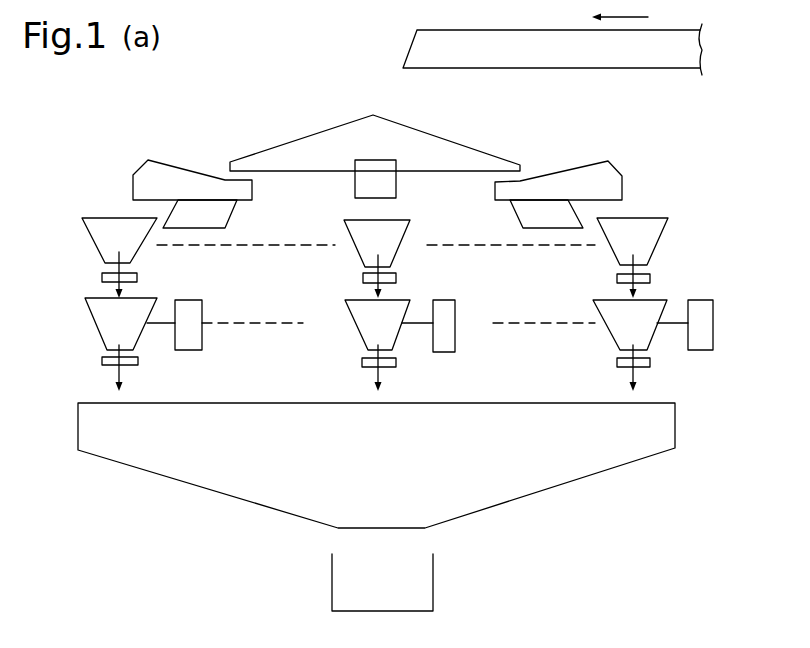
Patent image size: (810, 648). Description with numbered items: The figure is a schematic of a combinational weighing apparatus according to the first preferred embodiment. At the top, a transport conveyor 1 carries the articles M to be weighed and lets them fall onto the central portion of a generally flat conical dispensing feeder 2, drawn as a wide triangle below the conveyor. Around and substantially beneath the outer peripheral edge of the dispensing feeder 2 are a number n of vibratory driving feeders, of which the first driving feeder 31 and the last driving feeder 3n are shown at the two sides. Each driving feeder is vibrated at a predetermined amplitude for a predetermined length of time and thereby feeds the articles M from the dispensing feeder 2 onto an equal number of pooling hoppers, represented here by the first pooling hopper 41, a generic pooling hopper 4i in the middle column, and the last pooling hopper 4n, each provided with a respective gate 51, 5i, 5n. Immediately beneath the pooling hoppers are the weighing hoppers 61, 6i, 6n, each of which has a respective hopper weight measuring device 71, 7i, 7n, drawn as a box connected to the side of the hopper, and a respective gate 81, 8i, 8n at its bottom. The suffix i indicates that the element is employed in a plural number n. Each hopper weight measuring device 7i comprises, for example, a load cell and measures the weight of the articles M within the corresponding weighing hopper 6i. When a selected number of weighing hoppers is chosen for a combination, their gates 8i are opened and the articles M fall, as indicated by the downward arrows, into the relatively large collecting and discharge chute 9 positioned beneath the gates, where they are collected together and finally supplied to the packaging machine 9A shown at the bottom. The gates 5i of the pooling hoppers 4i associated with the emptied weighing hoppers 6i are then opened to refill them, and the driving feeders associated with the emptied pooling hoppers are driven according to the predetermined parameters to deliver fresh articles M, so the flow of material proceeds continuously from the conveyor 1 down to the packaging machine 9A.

The transport conveyor 1 is at (411, 38).
The dispensing feeder 2 is at (312, 133).
The driving feeder 31 is at (415, 198).
The driving feeder 3n is at (612, 165).
The pooling hopper 41 is at (87, 228).
The pooling hopper 4i is at (398, 235).
The pooling hopper 4n is at (657, 232).
The gate 51 is at (102, 280).
The gate 5i is at (396, 278).
The gate 5n is at (650, 277).
The weighing hopper 61 is at (98, 332).
The weighing hopper 6i is at (347, 308).
The weighing hopper 6n is at (613, 337).
The hopper weight measuring device 71 is at (202, 350).
The hopper weight measuring device 7i is at (455, 350).
The hopper weight measuring device 7n is at (713, 318).
The gate 81 is at (102, 365).
The gate 8i is at (362, 363).
The gate 8n is at (650, 365).
The discharge chute 9 is at (607, 470).
The packaging machine 9A is at (433, 582).
The articles M is at (376, 94).